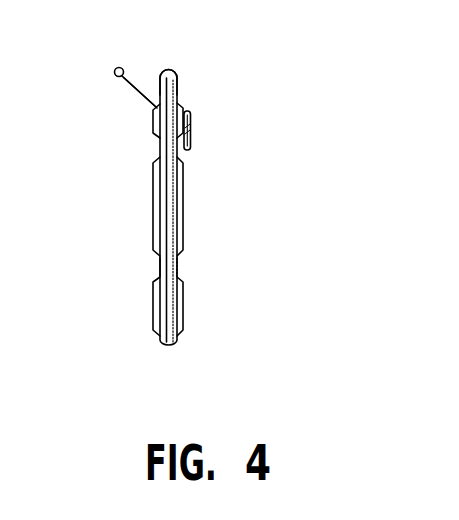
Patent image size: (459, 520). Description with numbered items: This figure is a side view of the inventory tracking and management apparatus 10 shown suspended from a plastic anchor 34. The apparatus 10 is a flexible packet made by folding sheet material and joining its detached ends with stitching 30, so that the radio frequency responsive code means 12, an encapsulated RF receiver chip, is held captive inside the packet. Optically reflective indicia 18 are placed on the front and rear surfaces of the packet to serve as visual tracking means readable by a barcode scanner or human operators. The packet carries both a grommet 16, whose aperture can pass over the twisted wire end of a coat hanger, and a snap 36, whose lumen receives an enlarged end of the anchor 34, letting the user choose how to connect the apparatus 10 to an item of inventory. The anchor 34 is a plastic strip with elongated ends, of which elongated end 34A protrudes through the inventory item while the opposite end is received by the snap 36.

The inventory tracking and management apparatus 10 is at (247, 108).
The radio frequency responsive code means 12 is at (178, 263).
The grommet 16 is at (151, 228).
The optically reflective indicia 18 is at (137, 316).
The stitching 30 is at (173, 90).
The plastic anchor 34 is at (192, 140).
The elongated end 34A is at (116, 69).
The snap 36 is at (152, 121).